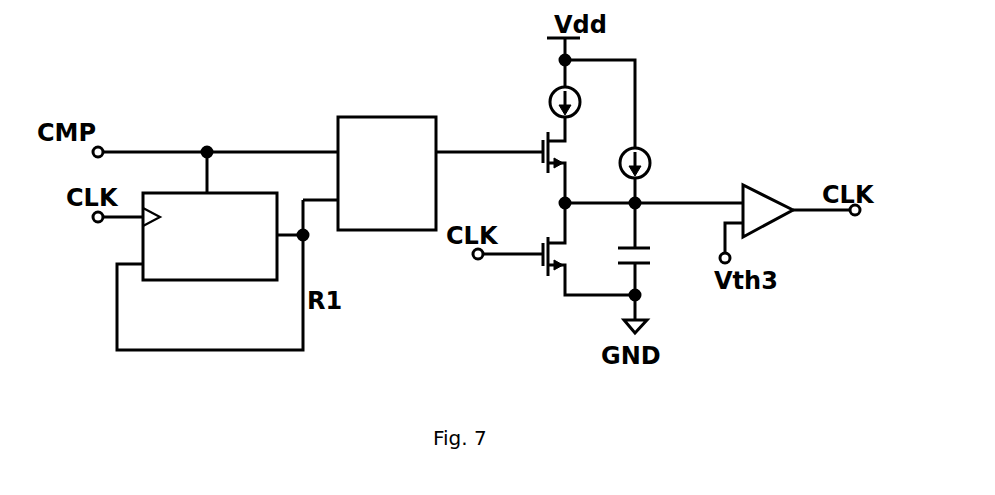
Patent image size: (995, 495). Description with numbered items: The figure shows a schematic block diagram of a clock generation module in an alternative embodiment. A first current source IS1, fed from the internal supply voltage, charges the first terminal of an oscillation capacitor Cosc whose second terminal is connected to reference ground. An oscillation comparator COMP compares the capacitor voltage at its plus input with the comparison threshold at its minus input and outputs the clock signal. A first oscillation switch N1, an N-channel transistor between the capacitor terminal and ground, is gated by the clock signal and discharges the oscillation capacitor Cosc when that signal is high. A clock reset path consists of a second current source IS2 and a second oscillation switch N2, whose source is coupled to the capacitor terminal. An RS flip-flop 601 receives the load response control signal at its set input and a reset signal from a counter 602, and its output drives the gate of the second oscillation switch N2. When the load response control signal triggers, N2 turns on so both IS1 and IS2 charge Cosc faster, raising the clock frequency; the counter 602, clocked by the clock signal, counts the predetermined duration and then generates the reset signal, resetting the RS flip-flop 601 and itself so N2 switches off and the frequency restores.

The RS flip-flop 601 is at (387, 117).
The counter 602 is at (218, 281).
The first oscillation switch N1 is at (573, 251).
The second oscillation switch N2 is at (537, 160).
The first current source IS1 is at (659, 165).
The second current source IS2 is at (586, 96).
The oscillation capacitor Cosc is at (659, 242).
The oscillation comparator COMP is at (764, 196).